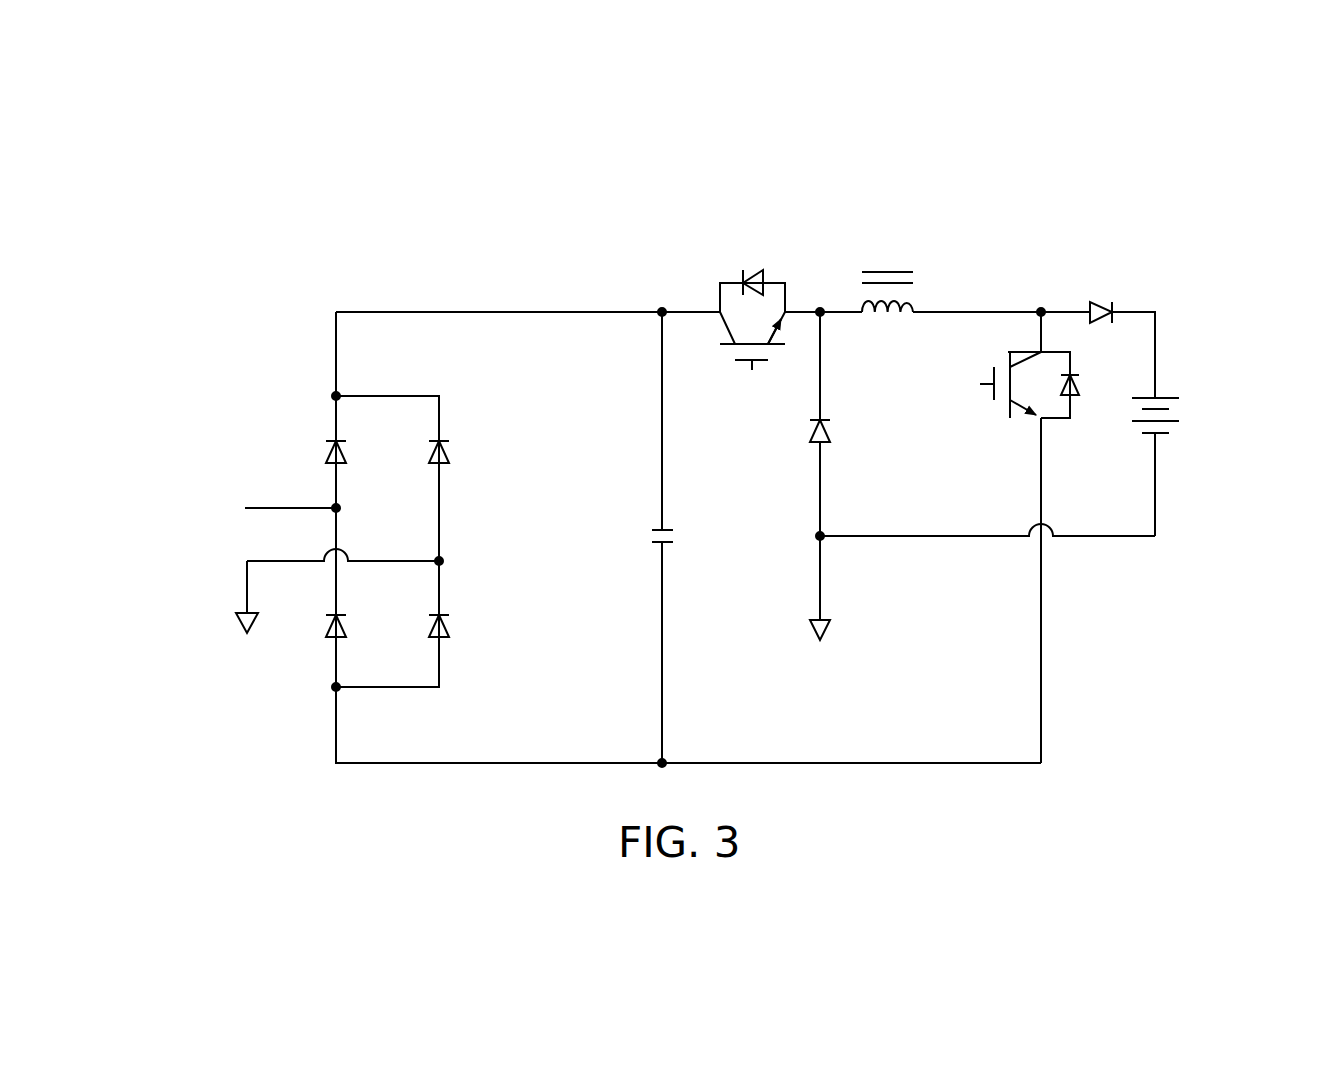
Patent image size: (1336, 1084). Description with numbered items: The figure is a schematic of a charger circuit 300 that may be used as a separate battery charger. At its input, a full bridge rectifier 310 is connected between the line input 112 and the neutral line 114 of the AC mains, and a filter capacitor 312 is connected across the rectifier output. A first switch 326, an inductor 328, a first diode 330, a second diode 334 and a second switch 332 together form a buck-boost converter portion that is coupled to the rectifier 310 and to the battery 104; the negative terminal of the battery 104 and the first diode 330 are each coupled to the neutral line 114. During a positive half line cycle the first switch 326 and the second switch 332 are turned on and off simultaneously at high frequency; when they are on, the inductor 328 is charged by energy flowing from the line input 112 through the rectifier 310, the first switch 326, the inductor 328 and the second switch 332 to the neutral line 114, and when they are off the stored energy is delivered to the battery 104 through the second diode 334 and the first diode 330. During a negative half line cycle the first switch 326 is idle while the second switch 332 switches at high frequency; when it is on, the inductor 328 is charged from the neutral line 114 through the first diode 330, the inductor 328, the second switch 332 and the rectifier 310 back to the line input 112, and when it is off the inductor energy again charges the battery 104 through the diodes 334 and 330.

The charger circuit 300 is at (343, 281).
The full bridge rectifier 310 is at (466, 428).
The filter capacitor 312 is at (658, 528).
The first switch 326 is at (765, 282).
The inductor 328 is at (892, 272).
The first diode 330 is at (822, 420).
The second switch 332 is at (993, 396).
The second diode 334 is at (1115, 305).
The battery 104 is at (1165, 397).
The line input 112 is at (272, 508).
The neutral line 114 is at (245, 572).